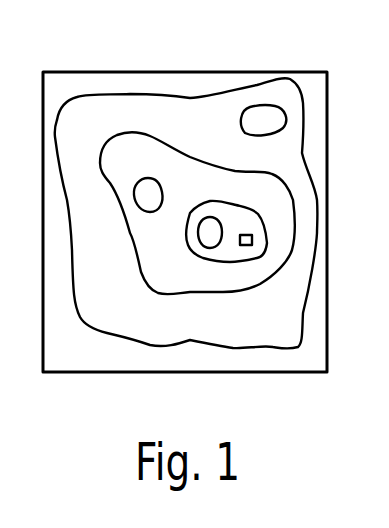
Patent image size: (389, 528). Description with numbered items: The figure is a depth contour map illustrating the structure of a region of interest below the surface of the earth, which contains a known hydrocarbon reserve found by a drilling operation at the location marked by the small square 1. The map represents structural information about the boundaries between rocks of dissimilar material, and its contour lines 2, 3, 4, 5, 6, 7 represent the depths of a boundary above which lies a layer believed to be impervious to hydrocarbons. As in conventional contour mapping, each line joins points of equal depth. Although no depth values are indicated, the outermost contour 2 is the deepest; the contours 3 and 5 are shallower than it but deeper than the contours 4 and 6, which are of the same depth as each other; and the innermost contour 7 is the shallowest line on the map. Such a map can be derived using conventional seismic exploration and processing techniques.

The small square 1 is at (252, 241).
The contour line 2 is at (275, 348).
The contour line 3 is at (137, 255).
The contour line 4 is at (152, 178).
The contour line 5 is at (280, 108).
The contour line 6 is at (257, 258).
The contour line 7 is at (217, 250).